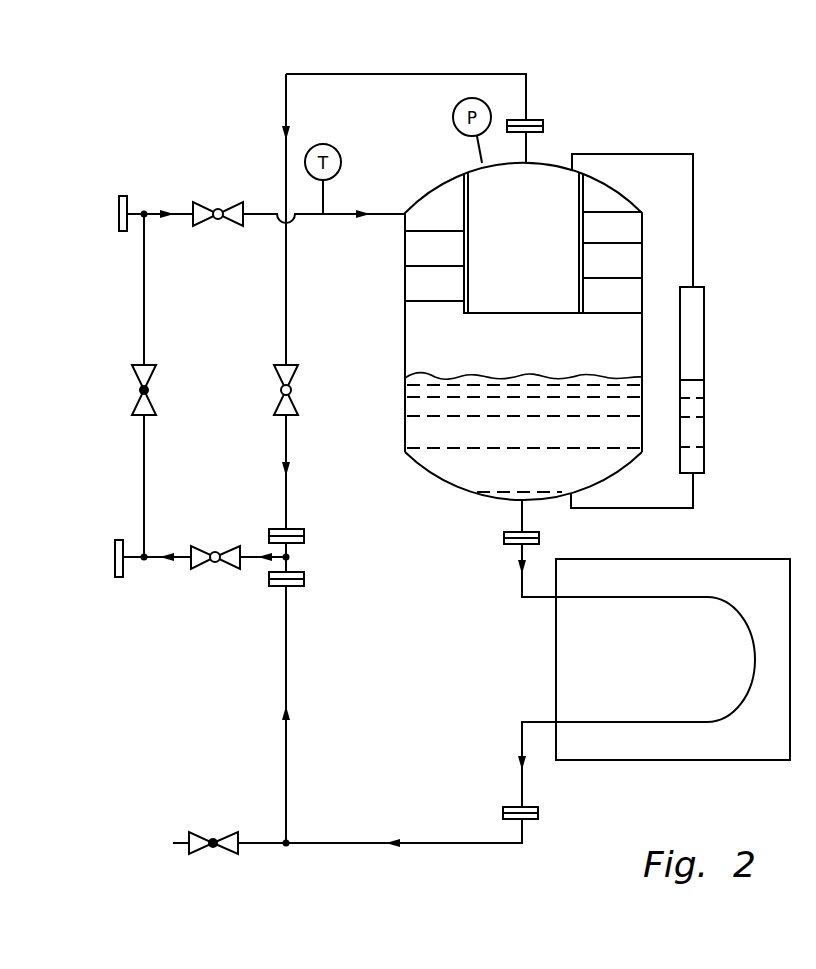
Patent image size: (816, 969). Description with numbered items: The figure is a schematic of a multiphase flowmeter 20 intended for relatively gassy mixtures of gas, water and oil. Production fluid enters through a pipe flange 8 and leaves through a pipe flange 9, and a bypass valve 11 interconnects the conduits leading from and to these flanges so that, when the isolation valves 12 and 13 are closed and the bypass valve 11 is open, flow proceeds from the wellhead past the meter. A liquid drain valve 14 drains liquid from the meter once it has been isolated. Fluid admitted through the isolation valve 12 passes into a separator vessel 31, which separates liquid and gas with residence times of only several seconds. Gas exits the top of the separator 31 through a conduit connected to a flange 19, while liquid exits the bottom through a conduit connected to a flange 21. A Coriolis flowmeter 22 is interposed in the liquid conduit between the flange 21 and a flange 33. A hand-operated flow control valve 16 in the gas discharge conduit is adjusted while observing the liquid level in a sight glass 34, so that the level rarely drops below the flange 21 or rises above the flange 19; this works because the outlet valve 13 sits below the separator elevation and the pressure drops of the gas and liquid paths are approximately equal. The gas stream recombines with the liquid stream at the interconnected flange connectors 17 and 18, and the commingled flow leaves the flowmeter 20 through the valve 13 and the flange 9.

The pipe flange 8 is at (123, 196).
The pipe flange 9 is at (119, 540).
The bypass valve 11 is at (138, 366).
The isolation valve 12 is at (237, 226).
The isolation valve 13 is at (203, 547).
The liquid drain valve 14 is at (193, 852).
The flow control valve 16 is at (280, 366).
The flange connector 17 is at (304, 536).
The flange connector 18 is at (304, 579).
The flange 19 is at (543, 126).
The flowmeter 20 is at (742, 108).
The flange 21 is at (539, 538).
The Coriolis flowmeter 22 is at (754, 559).
The separator vessel 31 is at (405, 340).
The flange 33 is at (530, 819).
The sight glass 34 is at (704, 337).